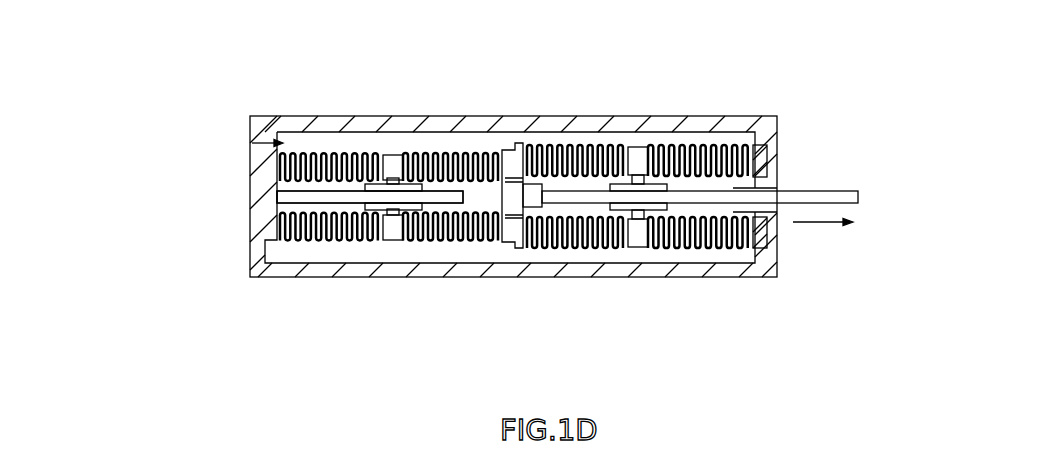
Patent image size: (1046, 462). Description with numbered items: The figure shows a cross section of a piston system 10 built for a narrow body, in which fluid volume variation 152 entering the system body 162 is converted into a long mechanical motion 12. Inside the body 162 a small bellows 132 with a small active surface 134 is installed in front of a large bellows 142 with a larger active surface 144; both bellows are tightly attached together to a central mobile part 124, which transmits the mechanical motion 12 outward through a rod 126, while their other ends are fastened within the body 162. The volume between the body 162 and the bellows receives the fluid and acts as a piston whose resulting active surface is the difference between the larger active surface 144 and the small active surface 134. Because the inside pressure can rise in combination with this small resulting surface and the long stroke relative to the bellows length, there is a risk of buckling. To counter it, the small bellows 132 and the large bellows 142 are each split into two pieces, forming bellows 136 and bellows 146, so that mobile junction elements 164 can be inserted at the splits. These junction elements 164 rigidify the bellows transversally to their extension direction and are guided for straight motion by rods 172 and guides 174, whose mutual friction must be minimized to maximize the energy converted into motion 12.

The piston system 10 is at (238, 69).
The mechanical motion 12 is at (812, 225).
The mobile part 124 is at (518, 143).
The rod 126 is at (807, 197).
The small bellows 132 is at (366, 185).
The small active surface 134 is at (238, 172).
The bellows piece 136 is at (468, 155).
The large bellows 142 is at (577, 145).
The larger active surface 144 is at (162, 160).
The bellows piece 146 is at (727, 146).
The fluid volume difference 152 is at (250, 141).
The system body 162 is at (282, 268).
The mobile junction element 164 is at (395, 238).
The rod 172 is at (336, 201).
The guide 174 is at (406, 209).